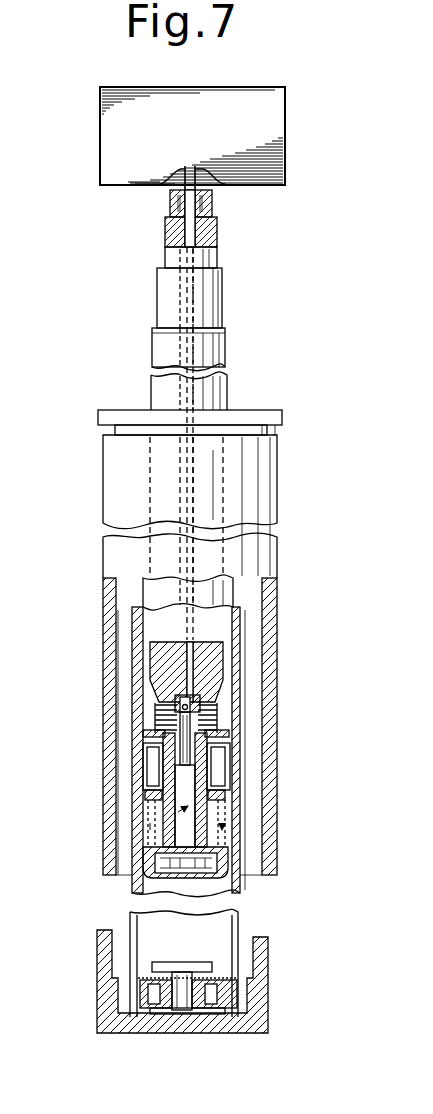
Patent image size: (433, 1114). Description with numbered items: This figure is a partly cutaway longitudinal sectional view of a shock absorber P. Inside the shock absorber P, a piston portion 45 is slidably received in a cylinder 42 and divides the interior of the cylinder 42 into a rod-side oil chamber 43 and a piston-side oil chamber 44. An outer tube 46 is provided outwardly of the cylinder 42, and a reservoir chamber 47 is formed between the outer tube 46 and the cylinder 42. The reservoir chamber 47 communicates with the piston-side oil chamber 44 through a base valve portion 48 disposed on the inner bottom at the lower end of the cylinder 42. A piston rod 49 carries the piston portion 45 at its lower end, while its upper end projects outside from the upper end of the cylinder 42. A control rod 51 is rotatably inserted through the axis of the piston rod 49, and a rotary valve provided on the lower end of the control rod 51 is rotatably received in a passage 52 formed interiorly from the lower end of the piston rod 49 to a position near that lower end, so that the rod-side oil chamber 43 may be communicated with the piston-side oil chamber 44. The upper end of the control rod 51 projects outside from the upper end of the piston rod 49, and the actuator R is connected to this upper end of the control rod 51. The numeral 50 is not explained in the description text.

The actuator R is at (285, 162).
The shock absorber P is at (274, 400).
The central rod 50 is at (216, 237).
The rod-side oil chamber 43 is at (230, 622).
The piston-side oil chamber 44 is at (213, 888).
The outer tube 46 is at (270, 810).
The reservoir chamber 47 is at (250, 722).
The piston rod 49 is at (213, 657).
The control rod 51 is at (180, 700).
The passage 52 is at (155, 817).
The piston portion 45 is at (146, 881).
The cylinder 42 is at (242, 887).
The base valve portion 48 is at (204, 956).